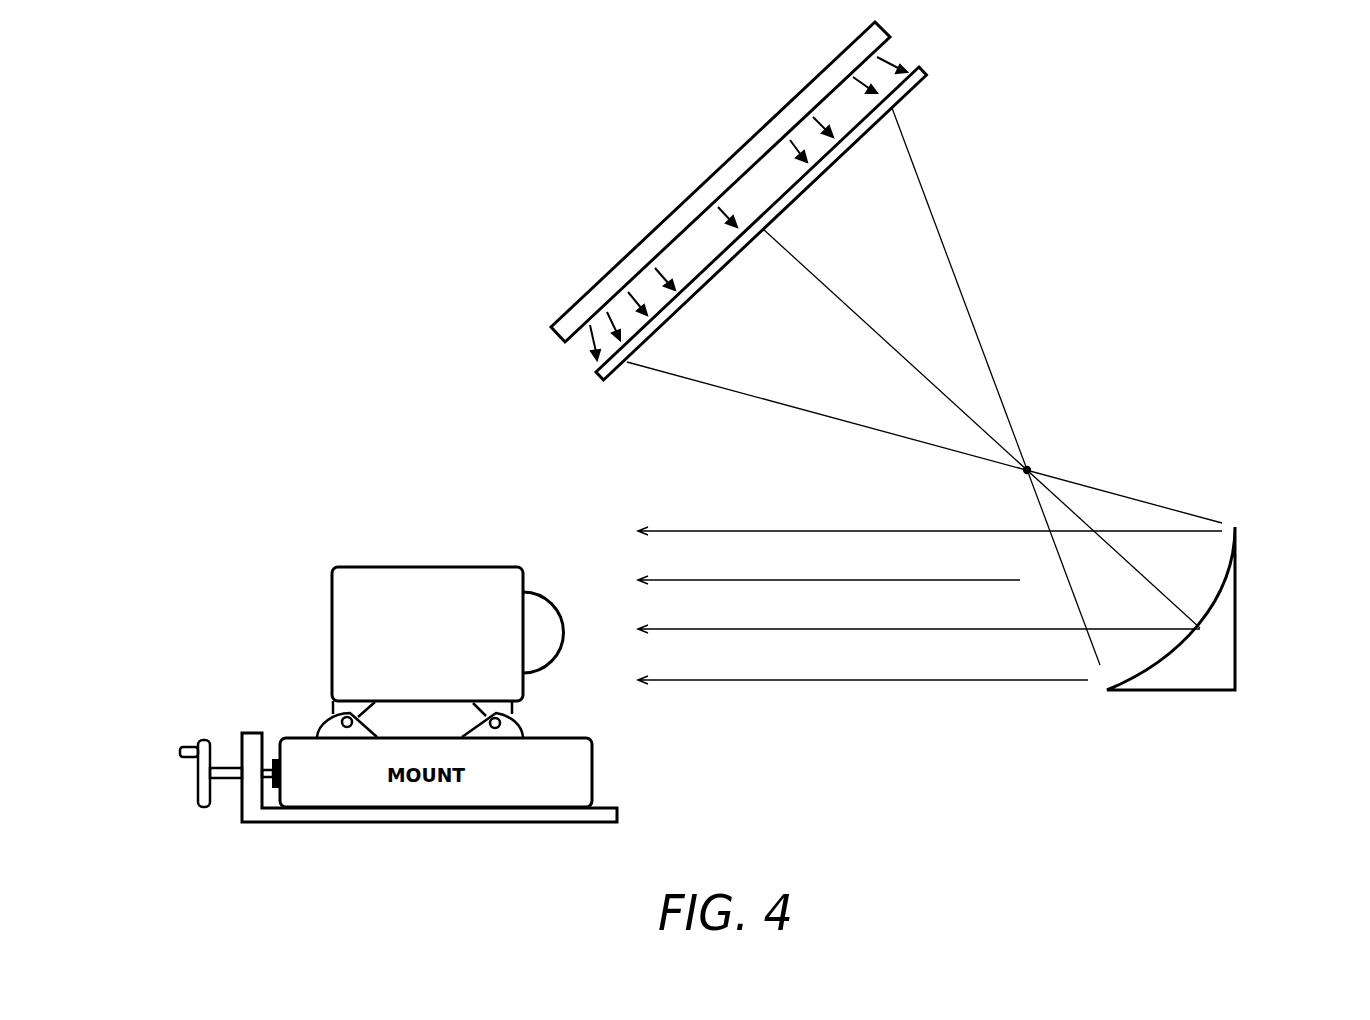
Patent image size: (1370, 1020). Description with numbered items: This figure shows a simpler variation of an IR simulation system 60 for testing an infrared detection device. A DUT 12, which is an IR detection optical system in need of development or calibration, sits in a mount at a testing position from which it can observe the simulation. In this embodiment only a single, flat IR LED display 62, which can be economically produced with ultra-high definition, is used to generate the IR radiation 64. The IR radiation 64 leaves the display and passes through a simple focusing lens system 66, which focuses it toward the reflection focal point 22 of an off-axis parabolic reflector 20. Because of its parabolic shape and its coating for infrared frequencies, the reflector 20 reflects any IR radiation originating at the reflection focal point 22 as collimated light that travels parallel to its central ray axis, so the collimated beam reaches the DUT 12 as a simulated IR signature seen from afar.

The DUT 12 is at (412, 567).
The off-axis parabolic reflector 20 is at (1238, 595).
The reflection focal point 22 is at (1030, 467).
The IR simulation system 60 is at (417, 222).
The flat IR LED display 62 is at (748, 141).
The IR radiation 64 is at (928, 197).
The focusing lens system 66 is at (927, 68).